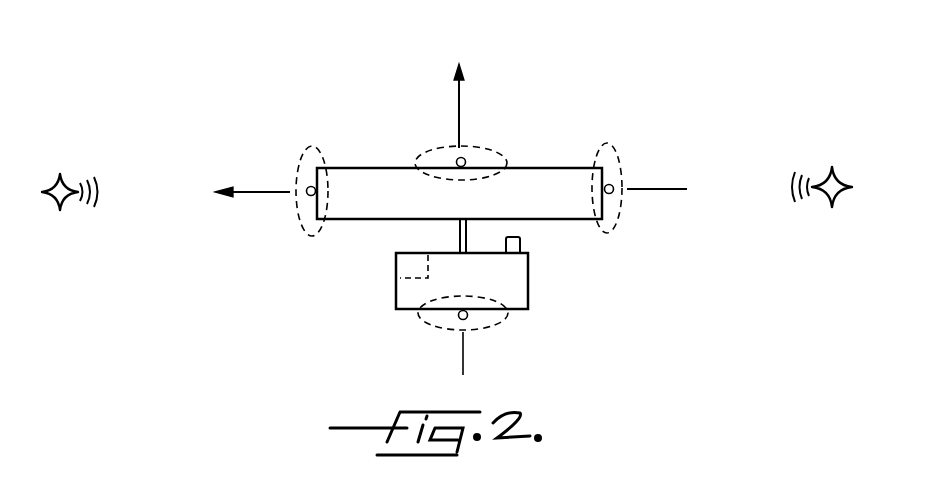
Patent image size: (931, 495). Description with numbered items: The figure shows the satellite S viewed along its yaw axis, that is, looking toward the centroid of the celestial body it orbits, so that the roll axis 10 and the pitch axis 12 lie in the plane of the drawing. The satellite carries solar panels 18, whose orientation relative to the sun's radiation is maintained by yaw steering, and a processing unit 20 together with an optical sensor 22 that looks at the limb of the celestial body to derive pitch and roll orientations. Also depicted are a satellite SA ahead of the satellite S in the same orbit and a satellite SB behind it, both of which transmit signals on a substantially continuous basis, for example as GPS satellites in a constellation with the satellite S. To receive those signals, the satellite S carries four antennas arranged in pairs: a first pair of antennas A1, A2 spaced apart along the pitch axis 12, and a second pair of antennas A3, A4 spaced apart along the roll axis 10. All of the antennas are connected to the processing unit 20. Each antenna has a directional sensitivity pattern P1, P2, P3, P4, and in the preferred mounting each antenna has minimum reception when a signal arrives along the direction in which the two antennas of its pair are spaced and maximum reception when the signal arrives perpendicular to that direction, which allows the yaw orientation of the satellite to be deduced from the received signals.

The roll axis 10 is at (265, 194).
The pitch axis 12 is at (463, 100).
The solar panels 18 is at (553, 168).
The processing unit 20 is at (410, 282).
The optical sensor 22 is at (522, 244).
The satellite S is at (529, 288).
The satellite ahead SA is at (64, 204).
The satellite behind SB is at (826, 200).
The directional sensitivity pattern P1 is at (440, 330).
The directional sensitivity pattern P2 is at (432, 148).
The directional sensitivity pattern P3 is at (300, 148).
The directional sensitivity pattern P4 is at (620, 150).
The antenna A1 is at (465, 322).
The antenna A2 is at (466, 160).
The antenna A3 is at (314, 196).
The antenna A4 is at (614, 193).